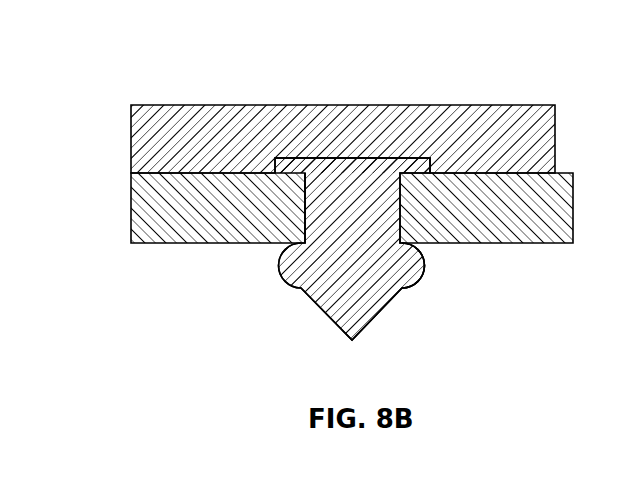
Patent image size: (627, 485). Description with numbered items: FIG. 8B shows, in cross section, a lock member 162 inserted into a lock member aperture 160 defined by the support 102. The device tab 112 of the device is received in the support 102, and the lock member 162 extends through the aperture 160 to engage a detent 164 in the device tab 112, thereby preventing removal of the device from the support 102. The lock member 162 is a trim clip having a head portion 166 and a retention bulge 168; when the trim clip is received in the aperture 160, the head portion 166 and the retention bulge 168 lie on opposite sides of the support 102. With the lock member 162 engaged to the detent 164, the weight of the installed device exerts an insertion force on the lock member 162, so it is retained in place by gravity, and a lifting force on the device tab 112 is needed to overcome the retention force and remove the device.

The support 102 is at (163, 243).
The device tab 112 is at (436, 105).
The lock member aperture 160 is at (316, 243).
The lock member 162 is at (442, 259).
The detent 164 is at (324, 174).
The head portion 166 is at (429, 157).
The retention bulge 168 is at (423, 283).